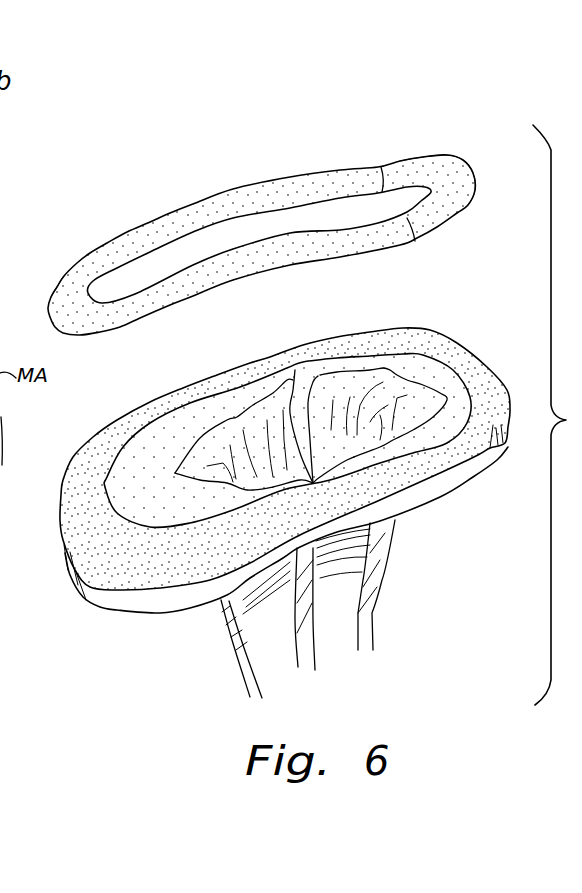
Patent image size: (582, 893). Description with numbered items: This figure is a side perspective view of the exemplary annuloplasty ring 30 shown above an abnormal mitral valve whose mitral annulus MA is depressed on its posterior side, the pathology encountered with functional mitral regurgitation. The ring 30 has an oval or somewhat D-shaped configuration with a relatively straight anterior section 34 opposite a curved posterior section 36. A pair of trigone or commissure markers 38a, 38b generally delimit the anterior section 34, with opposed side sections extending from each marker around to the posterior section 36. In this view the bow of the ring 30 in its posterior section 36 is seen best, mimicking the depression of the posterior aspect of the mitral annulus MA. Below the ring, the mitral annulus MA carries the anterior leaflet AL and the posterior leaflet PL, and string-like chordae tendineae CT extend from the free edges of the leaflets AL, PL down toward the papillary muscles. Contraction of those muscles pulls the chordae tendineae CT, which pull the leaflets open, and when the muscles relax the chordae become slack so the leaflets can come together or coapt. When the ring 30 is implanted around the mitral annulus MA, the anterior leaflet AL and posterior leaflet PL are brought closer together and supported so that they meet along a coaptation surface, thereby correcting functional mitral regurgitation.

The annuloplasty ring 30 is at (243, 177).
The anterior section 34 is at (473, 158).
The posterior section 36 is at (45, 320).
The trigone or commissure marker 38a is at (378, 172).
The trigone or commissure marker 38b is at (470, 203).
The mitral annulus MA is at (117, 562).
The posterior leaflet PL is at (169, 508).
The anterior leaflet AL is at (436, 381).
The chordae tendineae CT is at (230, 642).